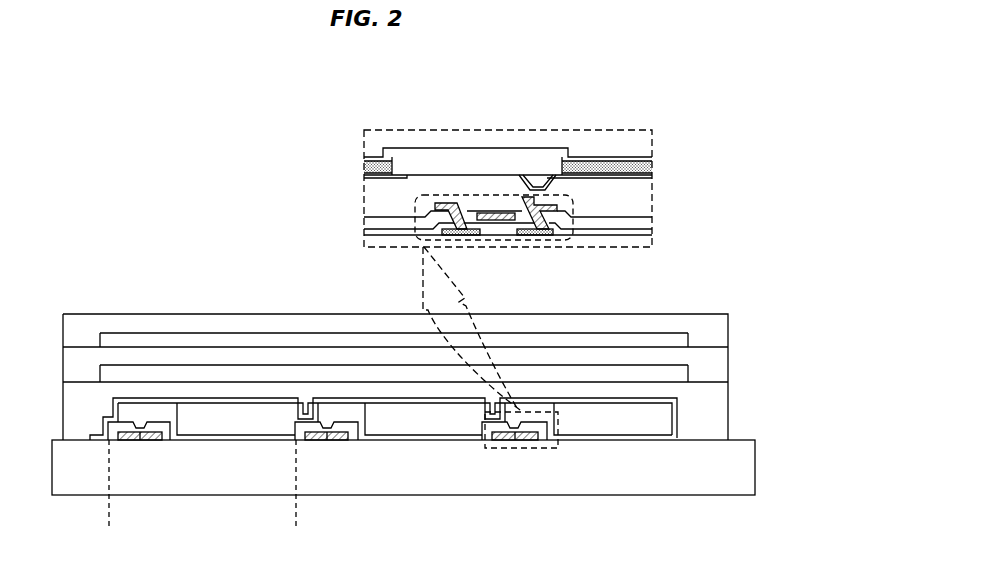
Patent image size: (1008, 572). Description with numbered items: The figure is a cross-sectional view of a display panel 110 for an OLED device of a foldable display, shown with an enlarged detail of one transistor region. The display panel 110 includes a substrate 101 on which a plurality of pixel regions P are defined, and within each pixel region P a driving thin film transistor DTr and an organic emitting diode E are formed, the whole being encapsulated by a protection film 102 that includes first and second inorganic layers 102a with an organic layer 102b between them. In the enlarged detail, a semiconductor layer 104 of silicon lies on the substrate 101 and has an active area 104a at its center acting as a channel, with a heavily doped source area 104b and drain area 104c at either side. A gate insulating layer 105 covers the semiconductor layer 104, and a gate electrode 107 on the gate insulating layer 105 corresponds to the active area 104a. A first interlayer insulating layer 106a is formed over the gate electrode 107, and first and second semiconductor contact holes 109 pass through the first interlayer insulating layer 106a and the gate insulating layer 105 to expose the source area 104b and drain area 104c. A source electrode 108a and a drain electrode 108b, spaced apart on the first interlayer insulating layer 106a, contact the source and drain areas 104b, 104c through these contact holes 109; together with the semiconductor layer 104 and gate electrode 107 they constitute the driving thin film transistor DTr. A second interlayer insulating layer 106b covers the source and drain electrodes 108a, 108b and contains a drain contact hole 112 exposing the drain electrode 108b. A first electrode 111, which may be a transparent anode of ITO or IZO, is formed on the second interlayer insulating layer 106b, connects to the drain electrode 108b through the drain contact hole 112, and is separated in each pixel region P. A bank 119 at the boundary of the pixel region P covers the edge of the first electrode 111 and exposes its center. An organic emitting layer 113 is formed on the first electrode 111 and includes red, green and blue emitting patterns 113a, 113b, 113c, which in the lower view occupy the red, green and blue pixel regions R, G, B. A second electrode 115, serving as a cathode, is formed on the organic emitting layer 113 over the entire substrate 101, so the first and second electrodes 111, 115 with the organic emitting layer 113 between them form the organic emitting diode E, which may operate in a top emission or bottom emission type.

The substrate 101 is at (655, 243).
The protection film 102 is at (447, 368).
The inorganic layers 102a is at (683, 372).
The organic layer 102b is at (683, 338).
The semiconductor layer 104 is at (498, 266).
The active area 104a is at (502, 233).
The source area 104b is at (471, 236).
The drain area 104c is at (536, 257).
The gate insulating layer 105 is at (580, 232).
The first interlayer insulating layer 106a is at (608, 222).
The second interlayer insulating layer 106b is at (645, 197).
The gate electrode 107 is at (500, 213).
The source electrode 108a is at (460, 202).
The drain electrode 108b is at (533, 211).
The semiconductor contact holes 109 is at (482, 175).
The display panel 110 is at (738, 289).
The first electrode 111 is at (583, 177).
The drain contact hole 112 is at (537, 180).
The organic emitting layer 113 is at (608, 168).
The red emitting pattern 113a is at (249, 428).
The green emitting pattern 113b is at (403, 429).
The blue emitting pattern 113c is at (573, 428).
The second electrode 115 is at (633, 158).
The bank 119 is at (428, 156).
The driving thin film transistor DTr is at (413, 228).
The organic emitting diode E is at (645, 100).
The pixel region P is at (294, 523).
The red pixel R is at (228, 423).
The green pixel G is at (418, 423).
The blue pixel B is at (584, 423).